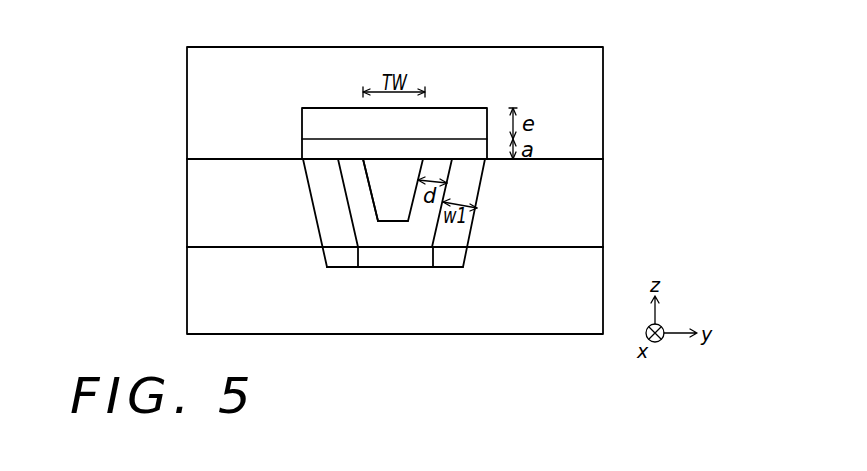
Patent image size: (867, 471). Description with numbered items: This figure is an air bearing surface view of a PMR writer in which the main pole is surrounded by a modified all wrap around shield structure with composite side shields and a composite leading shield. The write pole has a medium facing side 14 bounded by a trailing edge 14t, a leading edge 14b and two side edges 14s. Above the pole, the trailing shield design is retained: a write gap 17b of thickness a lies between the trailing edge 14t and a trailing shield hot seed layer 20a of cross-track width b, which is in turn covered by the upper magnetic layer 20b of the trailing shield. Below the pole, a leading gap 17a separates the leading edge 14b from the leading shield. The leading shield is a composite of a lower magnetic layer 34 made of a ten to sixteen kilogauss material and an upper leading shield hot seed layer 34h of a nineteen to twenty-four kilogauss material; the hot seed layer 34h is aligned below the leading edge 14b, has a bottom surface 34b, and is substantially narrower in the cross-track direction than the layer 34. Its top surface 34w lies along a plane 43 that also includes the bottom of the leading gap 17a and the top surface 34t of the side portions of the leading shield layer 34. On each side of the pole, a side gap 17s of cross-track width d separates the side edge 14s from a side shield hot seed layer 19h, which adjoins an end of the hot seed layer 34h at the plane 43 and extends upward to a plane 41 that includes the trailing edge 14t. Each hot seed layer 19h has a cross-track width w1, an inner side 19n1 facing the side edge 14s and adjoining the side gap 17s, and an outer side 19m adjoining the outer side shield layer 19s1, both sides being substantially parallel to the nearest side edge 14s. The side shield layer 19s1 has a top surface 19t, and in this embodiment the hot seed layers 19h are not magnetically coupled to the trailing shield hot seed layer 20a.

The medium facing side of the write pole 14 is at (408, 160).
The trailing edge 14t is at (380, 159).
The write pole side edge 14s is at (358, 173).
The leading edge 14b is at (399, 221).
The leading gap 17a is at (389, 238).
The write gap 17b is at (310, 149).
The side gap 17s is at (345, 198).
The top surface of side shield 19t is at (587, 159).
The side shield layer 19s1 is at (205, 176).
The outer side of side shield hot seed layer 19m is at (480, 196).
The side shield hot seed layer 19h is at (466, 237).
The inner side of side shield hot seed layer 19n1 is at (313, 217).
The trailing shield hot seed layer 20a is at (310, 120).
The upper magnetic layer of trailing shield 20b is at (583, 75).
The leading shield layer 34 is at (515, 325).
The bottom surface of leading shield hot seed layer 34b is at (332, 267).
The leading shield hot seed layer 34h is at (353, 258).
The top surface of leading shield hot seed layer 34w is at (418, 258).
The top surface of leading shield side portions 34t is at (552, 247).
The plane 41- 41 is at (675, 159).
The plane 43- 43 is at (675, 247).